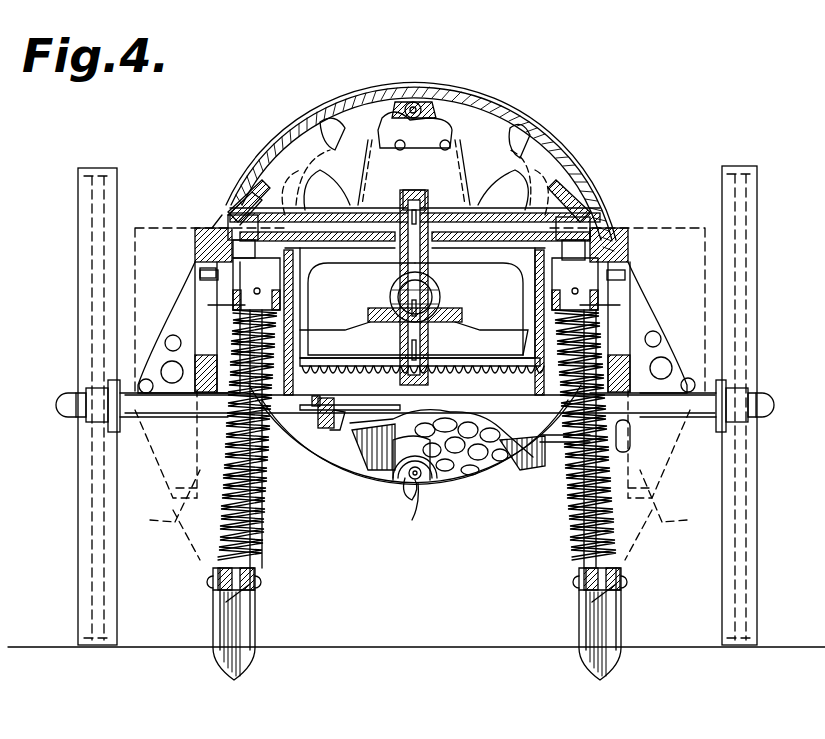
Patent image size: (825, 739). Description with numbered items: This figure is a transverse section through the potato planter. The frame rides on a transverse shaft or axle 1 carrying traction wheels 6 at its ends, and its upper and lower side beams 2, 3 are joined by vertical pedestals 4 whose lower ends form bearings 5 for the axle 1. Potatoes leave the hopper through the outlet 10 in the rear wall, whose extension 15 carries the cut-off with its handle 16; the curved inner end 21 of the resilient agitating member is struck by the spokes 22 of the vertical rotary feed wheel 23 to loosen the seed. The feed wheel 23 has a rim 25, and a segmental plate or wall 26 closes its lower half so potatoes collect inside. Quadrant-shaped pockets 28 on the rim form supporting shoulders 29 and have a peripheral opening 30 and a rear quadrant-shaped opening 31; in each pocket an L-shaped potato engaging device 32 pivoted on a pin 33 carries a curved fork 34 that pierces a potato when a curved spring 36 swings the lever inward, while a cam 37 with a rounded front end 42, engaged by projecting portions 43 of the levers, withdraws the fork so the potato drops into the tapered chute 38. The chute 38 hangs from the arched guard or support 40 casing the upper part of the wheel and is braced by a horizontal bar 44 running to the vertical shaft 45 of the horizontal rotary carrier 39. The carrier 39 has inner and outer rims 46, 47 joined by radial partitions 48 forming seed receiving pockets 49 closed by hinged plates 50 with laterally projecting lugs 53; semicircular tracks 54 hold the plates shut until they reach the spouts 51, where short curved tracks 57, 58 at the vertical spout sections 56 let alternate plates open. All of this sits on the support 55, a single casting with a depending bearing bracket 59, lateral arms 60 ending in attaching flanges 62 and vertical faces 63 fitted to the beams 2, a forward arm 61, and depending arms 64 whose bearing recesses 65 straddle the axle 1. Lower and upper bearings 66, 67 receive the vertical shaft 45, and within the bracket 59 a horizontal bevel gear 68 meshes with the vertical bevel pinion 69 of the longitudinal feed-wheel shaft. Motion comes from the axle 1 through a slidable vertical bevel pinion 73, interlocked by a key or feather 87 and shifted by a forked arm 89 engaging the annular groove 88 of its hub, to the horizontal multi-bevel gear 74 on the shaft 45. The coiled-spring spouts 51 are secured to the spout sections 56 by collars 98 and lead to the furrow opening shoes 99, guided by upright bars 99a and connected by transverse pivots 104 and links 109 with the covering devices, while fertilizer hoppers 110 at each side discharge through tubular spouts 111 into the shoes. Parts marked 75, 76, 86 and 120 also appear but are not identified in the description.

The transverse shaft or axle 1 is at (464, 478).
The upper horizontal side beams 2 is at (150, 240).
The lower horizontal side beams 3 is at (195, 370).
The vertical pedestals 4 is at (684, 345).
The bearings 5 is at (415, 406).
The traction or supporting wheels 6 is at (78, 573).
The outlet 10 is at (445, 428).
The extension 15 is at (548, 492).
The handle 16 is at (632, 456).
The inner end of agitating member 21 is at (380, 455).
The spokes 22 is at (575, 158).
The vertical rotary feed wheel 23 is at (372, 108).
The rim 25 is at (295, 140).
The segmental plate or wall 26 is at (497, 299).
The quadrant-shaped pockets 28 is at (395, 98).
The supporting shoulders 29 is at (500, 135).
The peripheral opening 30 is at (400, 485).
The quadrant-shaped opening 31 is at (540, 160).
The potato engaging device 32 is at (430, 118).
The pin 33 is at (420, 478).
The curved fork 34 is at (414, 538).
The curved spring 36 is at (540, 462).
The cam 37 is at (455, 130).
The chute 38 is at (414, 158).
The horizontal rotary carrier 39 is at (228, 228).
The arched guard or support 40 is at (260, 150).
The front end of cam 42 is at (470, 120).
The projecting portions 43 is at (332, 125).
The horizontal bar 44 is at (391, 196).
The vertical shaft 45 is at (400, 290).
The inner rim 46 is at (535, 195).
The outer rim 47 is at (195, 216).
The radial partitions 48 is at (330, 222).
The seed receiving pockets 49 is at (242, 218).
The hinged plates 50 is at (409, 237).
The spouts 51 is at (258, 498).
The lugs 53 is at (603, 240).
The semicircular tracks 54 is at (336, 256).
The support 55 is at (485, 256).
The vertical spout sections 56 is at (415, 284).
The short curved track 57 is at (410, 259).
The short curved track 58 is at (200, 258).
The central depending bearing bracket 59 is at (400, 330).
The laterally extending arms 60 is at (415, 249).
The central forwardly extending arm 61 is at (408, 280).
The terminal attaching flanges 62 is at (417, 297).
The vertical faces 63 is at (200, 264).
The depending arms 64 is at (414, 321).
The bearing recesses 65 is at (285, 450).
The central bearing 66 is at (486, 338).
The upper central bearing 67 is at (422, 292).
The horizontal bevel gear 68 is at (368, 314).
The vertical bevel pinion 69 is at (417, 305).
The vertical bevel pinion 73 is at (338, 424).
The horizontal multi-bevel gear 74 is at (458, 368).
The arm 75 is at (482, 342).
The collar 76 is at (408, 345).
The lever arm 86 is at (375, 450).
The key or feather 87 is at (348, 404).
The annular groove 88 is at (318, 408).
The forked arm 89 is at (340, 450).
The collars 98 is at (238, 305).
The furrow opening shoes 99 is at (255, 626).
The upright bars or members 99a is at (235, 540).
The short transverse rods or pivots 104 is at (256, 582).
The links or bars 109 is at (234, 596).
The fertilizer hoppers or containers 110 is at (130, 330).
The depending tubular portions or spouts 111 is at (420, 502).
The guide 120 is at (212, 422).